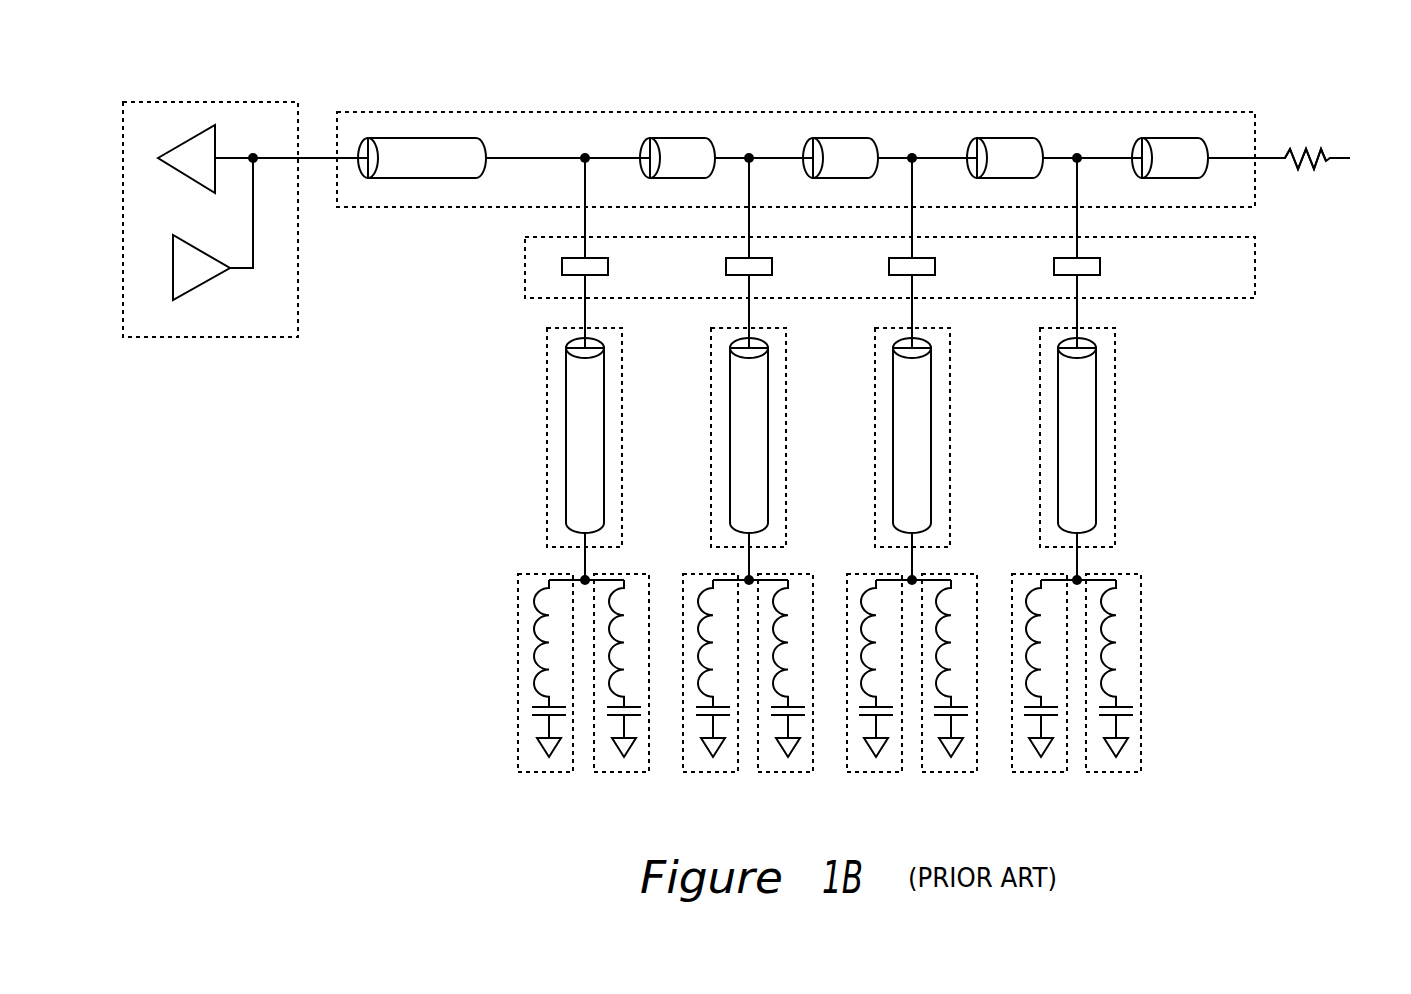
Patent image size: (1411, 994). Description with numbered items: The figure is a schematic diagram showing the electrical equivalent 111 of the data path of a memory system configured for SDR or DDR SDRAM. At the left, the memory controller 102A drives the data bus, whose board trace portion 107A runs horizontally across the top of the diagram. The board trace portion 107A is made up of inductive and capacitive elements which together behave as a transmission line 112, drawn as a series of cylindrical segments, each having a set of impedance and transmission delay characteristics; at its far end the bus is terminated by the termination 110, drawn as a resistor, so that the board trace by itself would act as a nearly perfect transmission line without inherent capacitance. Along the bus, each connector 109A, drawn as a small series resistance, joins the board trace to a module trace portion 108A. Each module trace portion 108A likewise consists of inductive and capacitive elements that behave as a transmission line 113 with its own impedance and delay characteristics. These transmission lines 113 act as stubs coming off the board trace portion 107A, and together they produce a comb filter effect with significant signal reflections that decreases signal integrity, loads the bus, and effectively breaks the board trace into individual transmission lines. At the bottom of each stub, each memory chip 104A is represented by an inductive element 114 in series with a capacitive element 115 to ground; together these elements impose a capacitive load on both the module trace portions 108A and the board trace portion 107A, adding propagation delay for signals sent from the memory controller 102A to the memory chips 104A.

The memory controller 102A is at (298, 103).
The board trace portion 107A is at (1068, 112).
The transmission line 112 is at (427, 137).
The termination 110 is at (1313, 150).
The connector 109A is at (562, 275).
The electrical equivalent 111 is at (415, 455).
The module trace portion 108A is at (547, 470).
The transmission line 113 is at (566, 423).
The memory chip 104A is at (1140, 803).
The inductive element 114 is at (534, 612).
The capacitive element 115 is at (518, 657).